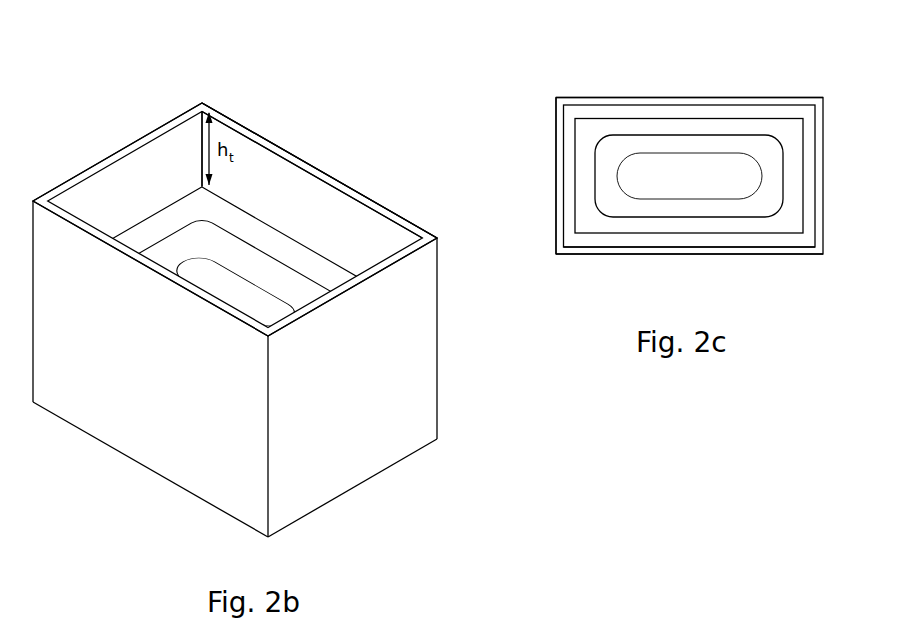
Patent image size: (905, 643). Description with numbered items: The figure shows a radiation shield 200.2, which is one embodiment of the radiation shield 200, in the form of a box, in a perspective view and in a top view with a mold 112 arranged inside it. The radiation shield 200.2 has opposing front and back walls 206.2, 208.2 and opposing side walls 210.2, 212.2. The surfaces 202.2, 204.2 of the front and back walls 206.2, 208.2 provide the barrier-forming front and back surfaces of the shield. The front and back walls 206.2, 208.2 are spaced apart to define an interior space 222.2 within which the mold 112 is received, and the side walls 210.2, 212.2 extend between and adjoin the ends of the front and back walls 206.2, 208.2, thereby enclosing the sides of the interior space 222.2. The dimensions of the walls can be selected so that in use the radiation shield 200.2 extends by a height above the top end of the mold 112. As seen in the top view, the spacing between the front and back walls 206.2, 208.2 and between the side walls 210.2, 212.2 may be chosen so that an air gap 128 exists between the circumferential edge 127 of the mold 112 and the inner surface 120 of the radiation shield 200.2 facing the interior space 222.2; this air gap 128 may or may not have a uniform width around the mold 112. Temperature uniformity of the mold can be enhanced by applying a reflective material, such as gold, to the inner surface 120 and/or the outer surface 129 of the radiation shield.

In FIG. 2B, the mold 112 is at (177, 213).
In FIG. 2C, the mold 112 is at (627, 123).
In FIG. 2B, the inner surface 120 is at (226, 135).
In FIG. 2C, the inner surface 120 is at (755, 247).
In FIG. 2C, the circumferential edge 127 is at (677, 234).
In FIG. 2C, the air gap 128 is at (574, 180).
In FIG. 2B, the outer surface 129 is at (238, 503).
In FIG. 2B, the radiation shield 200 is at (235, 200).
In FIG. 2C, the radiation shield 200 is at (689, 73).
In FIG. 2B, the radiation shield 200.2 is at (176, 117).
In FIG. 2C, the radiation shield 200.2 is at (712, 98).
In FIG. 2B, the surface 202.2 is at (404, 438).
In FIG. 2B, the surface 204.2 is at (106, 151).
In FIG. 2B, the front wall 206.2 is at (353, 477).
In FIG. 2C, the front wall 206.2 is at (822, 153).
In FIG. 2B, the back wall 208.2 is at (106, 176).
In FIG. 2C, the back wall 208.2 is at (561, 148).
In FIG. 2B, the side wall 210.2 is at (295, 173).
In FIG. 2C, the side wall 210.2 is at (671, 104).
In FIG. 2B, the side wall 212.2 is at (157, 460).
In FIG. 2C, the side wall 212.2 is at (637, 254).
In FIG. 2B, the interior space 222.2 is at (264, 182).